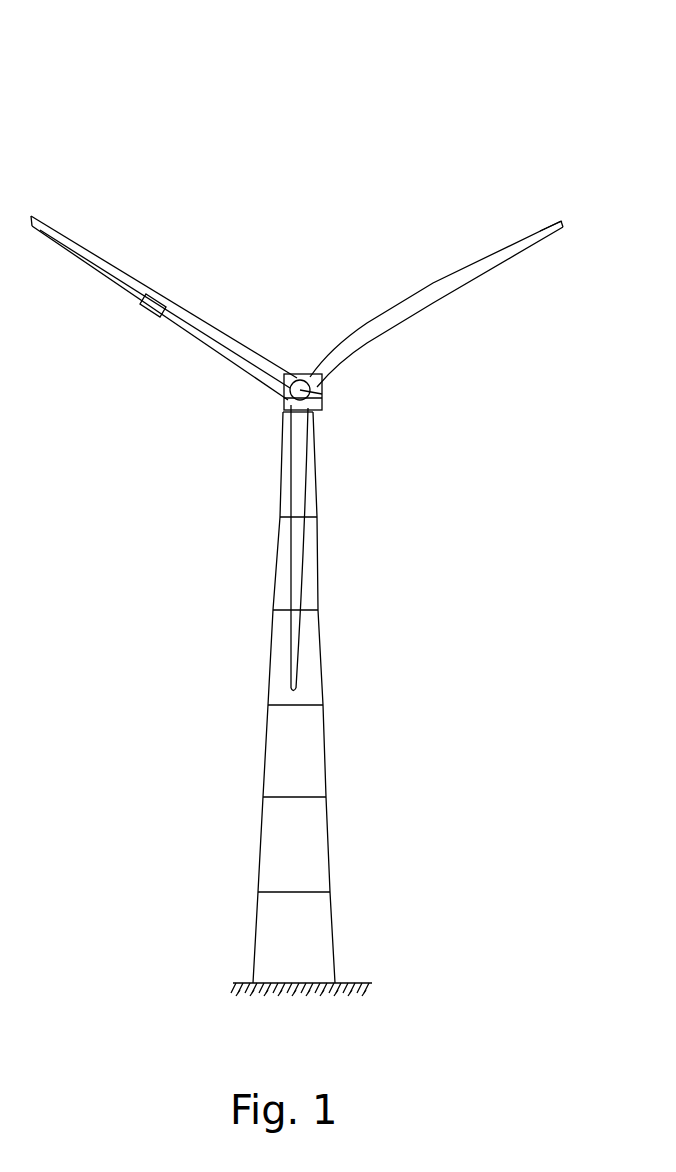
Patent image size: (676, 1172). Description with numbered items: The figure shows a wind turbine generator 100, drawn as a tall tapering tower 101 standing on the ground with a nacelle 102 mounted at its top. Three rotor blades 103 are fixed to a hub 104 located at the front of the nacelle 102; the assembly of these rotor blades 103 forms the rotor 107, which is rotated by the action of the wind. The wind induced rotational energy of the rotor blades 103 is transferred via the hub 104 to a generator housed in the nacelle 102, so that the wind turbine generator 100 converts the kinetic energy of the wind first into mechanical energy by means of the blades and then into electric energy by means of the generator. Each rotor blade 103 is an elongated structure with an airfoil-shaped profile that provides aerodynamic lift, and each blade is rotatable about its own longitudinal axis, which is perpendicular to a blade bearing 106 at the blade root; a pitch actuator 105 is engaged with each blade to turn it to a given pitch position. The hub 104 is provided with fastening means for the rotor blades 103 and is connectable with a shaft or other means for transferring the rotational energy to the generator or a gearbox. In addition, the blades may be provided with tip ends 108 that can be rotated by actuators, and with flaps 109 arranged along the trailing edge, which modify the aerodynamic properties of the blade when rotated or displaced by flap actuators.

The wind turbine generator 100 is at (396, 80).
The tower 101 is at (312, 847).
The nacelle 102 is at (292, 378).
The rotor blades 103 is at (367, 338).
The hub 104 is at (296, 394).
The pitch actuator 105 is at (309, 392).
The blade bearing 106 is at (322, 394).
The rotor 107 is at (524, 211).
The tip ends 108 is at (49, 226).
The flaps 109 is at (168, 313).